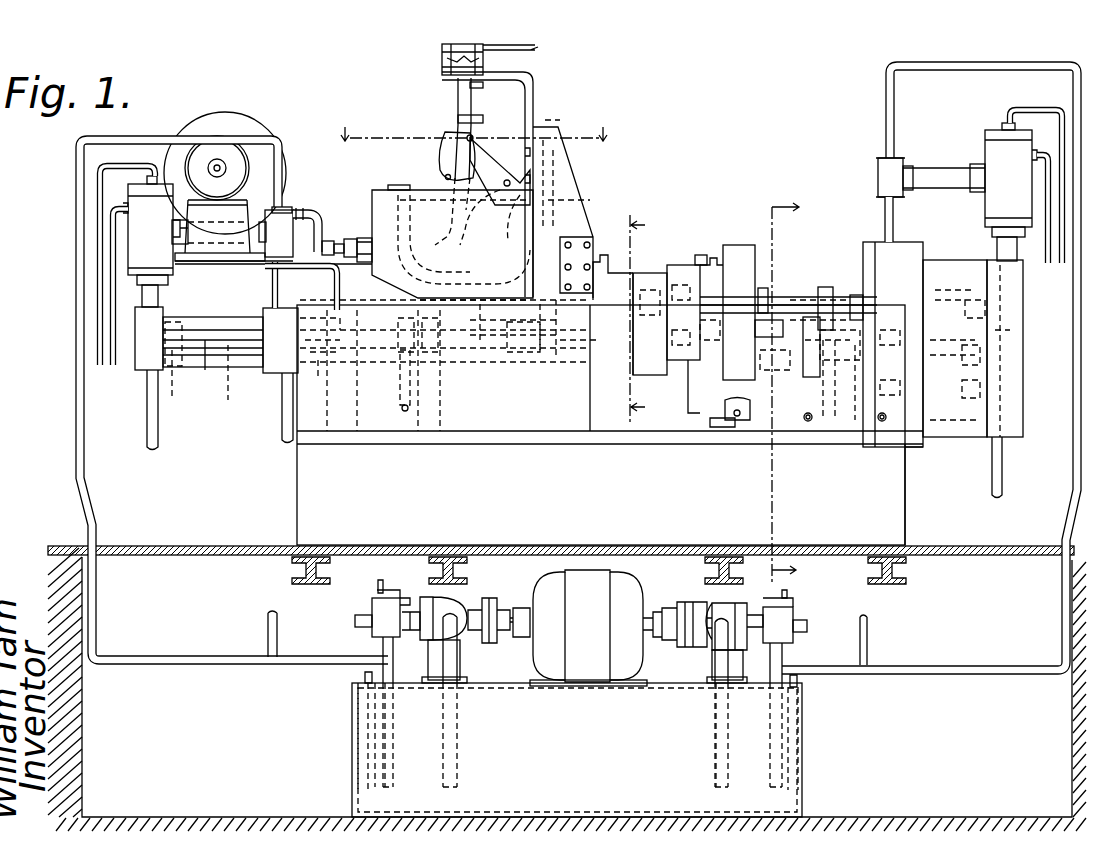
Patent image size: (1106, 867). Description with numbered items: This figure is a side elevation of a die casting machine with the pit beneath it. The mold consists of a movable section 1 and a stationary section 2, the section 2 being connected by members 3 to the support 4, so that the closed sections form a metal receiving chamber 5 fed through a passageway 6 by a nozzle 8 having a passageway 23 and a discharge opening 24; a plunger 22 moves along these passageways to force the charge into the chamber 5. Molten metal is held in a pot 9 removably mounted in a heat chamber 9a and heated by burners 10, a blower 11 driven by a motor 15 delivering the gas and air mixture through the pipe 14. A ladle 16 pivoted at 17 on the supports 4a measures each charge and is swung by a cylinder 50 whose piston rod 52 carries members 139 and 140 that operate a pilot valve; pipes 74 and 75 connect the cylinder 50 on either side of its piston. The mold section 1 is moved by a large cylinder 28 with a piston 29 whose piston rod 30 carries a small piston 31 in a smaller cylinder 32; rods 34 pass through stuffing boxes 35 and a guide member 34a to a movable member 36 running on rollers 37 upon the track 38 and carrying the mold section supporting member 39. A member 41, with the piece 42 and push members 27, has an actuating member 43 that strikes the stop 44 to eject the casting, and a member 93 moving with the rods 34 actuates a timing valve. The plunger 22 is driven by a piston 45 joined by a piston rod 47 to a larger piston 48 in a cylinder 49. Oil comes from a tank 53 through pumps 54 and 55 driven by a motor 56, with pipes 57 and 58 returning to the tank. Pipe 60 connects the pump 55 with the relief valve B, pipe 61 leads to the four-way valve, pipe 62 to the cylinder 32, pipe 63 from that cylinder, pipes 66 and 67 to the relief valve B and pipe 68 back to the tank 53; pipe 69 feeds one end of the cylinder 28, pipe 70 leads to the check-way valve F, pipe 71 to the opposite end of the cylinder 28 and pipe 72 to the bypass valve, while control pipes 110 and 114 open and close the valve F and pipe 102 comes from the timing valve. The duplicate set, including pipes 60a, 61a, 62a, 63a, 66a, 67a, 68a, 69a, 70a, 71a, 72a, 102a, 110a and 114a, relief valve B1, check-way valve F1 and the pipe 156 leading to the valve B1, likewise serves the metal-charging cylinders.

The mold section 1 is at (648, 272).
The mold section 2 is at (615, 278).
The members 3 is at (603, 268).
The support 4 is at (562, 470).
The supports 4a is at (568, 187).
The metal receiving chamber 5 is at (793, 390).
The passageway 6 is at (610, 468).
The nozzle 8 is at (540, 355).
The pot 9 is at (418, 190).
The heat chamber 9a is at (385, 215).
The burners 10 is at (343, 243).
The blower 11 is at (236, 128).
The pipe 14 is at (311, 210).
The motor 15 is at (200, 160).
The ladle 16 is at (445, 155).
The pivot 17 is at (520, 190).
The plunger 22 is at (480, 345).
The passageway 23 is at (556, 358).
The discharge opening 24 is at (515, 322).
The push members 27 is at (672, 290).
The large cylinder 28 is at (962, 418).
The piston 29 is at (940, 367).
The piston rod 30 is at (912, 340).
The small piston 31 is at (824, 420).
The smaller cylinder 32 is at (857, 295).
The rods 34 is at (780, 298).
The guide member 34a is at (826, 287).
The stuffing boxes 35 is at (725, 432).
The movable member 36 is at (735, 248).
The rollers 37 is at (745, 418).
The track 38 is at (715, 427).
The mold section supporting member 39 is at (706, 262).
The member 41 is at (700, 255).
The piece 42 is at (688, 345).
The actuating member 43 is at (772, 337).
The stop 44 is at (810, 317).
The piston 45 is at (305, 350).
The piston rod 47 is at (226, 380).
The larger piston 48 is at (174, 371).
The cylinder 49 is at (210, 370).
The cylinder 50 is at (443, 67).
The piston rod 52 is at (458, 94).
The tank 53 is at (405, 733).
The pump 54 is at (455, 606).
The pump 55 is at (715, 610).
The motor 56 is at (590, 665).
The pipe 57 is at (720, 668).
The pipe 58 is at (458, 665).
The pipe 60 is at (750, 635).
The pipe 60a is at (412, 630).
The pipe 61 is at (807, 625).
The pipe 61a is at (355, 621).
The pipe 62 is at (808, 421).
The pipe 62a is at (400, 400).
The pipe 63 is at (880, 422).
The pipe 63a is at (285, 430).
The pipe 66 is at (868, 646).
The pipe 66a is at (268, 634).
The pipe 67 is at (782, 653).
The pipe 67a is at (383, 650).
The pipe 68 is at (772, 680).
The pipe 68a is at (388, 778).
The pipe 69 is at (895, 108).
The pipe 69a is at (282, 145).
The pipe 70 is at (940, 188).
The pipe 70a is at (262, 242).
The pipe 71 is at (1000, 246).
The pipe 71a is at (147, 306).
The pipe 72 is at (992, 491).
The pipe 72a is at (148, 436).
The pipe 74 is at (545, 84).
The pipe 75 is at (525, 54).
The member 93 is at (762, 288).
The pipe 102 is at (800, 684).
The pipe 102a is at (365, 678).
The pipe 110 is at (1008, 114).
The pipe 110a is at (100, 193).
The pipe 114 is at (1047, 155).
The pipe 114a is at (113, 227).
The member 139 is at (483, 86).
The member 140 is at (483, 118).
The pipe 156 is at (385, 584).
The relief valve B is at (790, 612).
The relief valve B1 is at (372, 605).
The check-way valve F is at (995, 148).
The check-way valve F1 is at (130, 261).